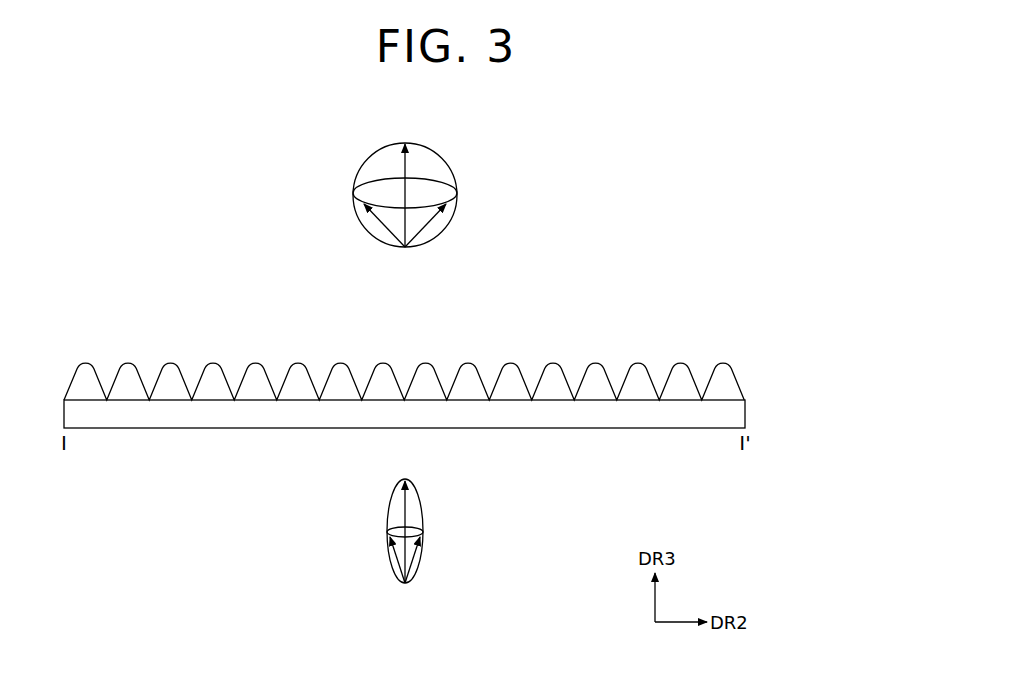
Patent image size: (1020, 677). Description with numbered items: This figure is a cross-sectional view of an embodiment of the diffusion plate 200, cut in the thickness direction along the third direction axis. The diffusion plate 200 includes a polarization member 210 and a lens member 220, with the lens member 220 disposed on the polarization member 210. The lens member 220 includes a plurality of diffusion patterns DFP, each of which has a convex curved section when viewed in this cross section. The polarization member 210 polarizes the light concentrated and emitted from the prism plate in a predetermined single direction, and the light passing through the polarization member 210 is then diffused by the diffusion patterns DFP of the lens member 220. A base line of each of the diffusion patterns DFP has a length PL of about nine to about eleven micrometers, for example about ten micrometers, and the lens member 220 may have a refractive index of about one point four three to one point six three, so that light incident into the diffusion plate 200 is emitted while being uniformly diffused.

The diffusion plate 200 is at (470, 397).
The polarization member 210 is at (735, 413).
The lens member 220 is at (730, 385).
The diffusion patterns DFP is at (640, 377).
The length of the base line PL is at (192, 400).